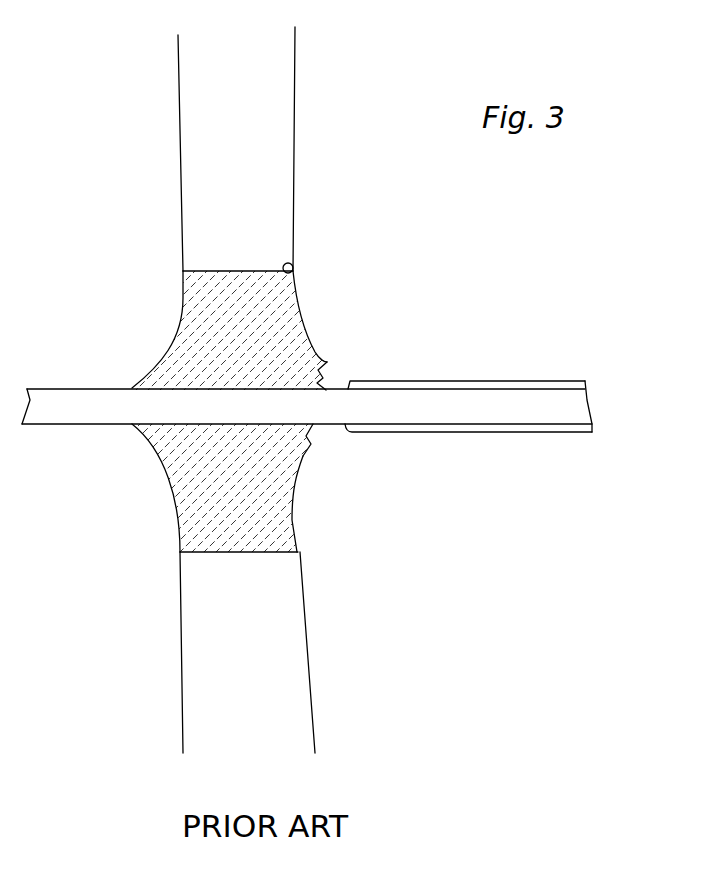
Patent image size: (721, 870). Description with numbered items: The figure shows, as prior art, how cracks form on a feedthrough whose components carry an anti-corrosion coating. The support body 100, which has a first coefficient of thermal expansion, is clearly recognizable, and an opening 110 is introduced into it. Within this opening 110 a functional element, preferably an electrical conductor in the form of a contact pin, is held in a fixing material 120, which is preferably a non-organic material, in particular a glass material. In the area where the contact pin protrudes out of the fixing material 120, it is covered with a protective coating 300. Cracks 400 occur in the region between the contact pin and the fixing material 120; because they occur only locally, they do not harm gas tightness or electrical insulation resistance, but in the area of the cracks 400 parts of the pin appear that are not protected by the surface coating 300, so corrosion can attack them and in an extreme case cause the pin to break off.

The support body 100 is at (283, 180).
The opening 110 is at (298, 265).
The fixing material 120 is at (300, 336).
The protective coating 300 is at (463, 381).
The cracks 400 is at (345, 374).